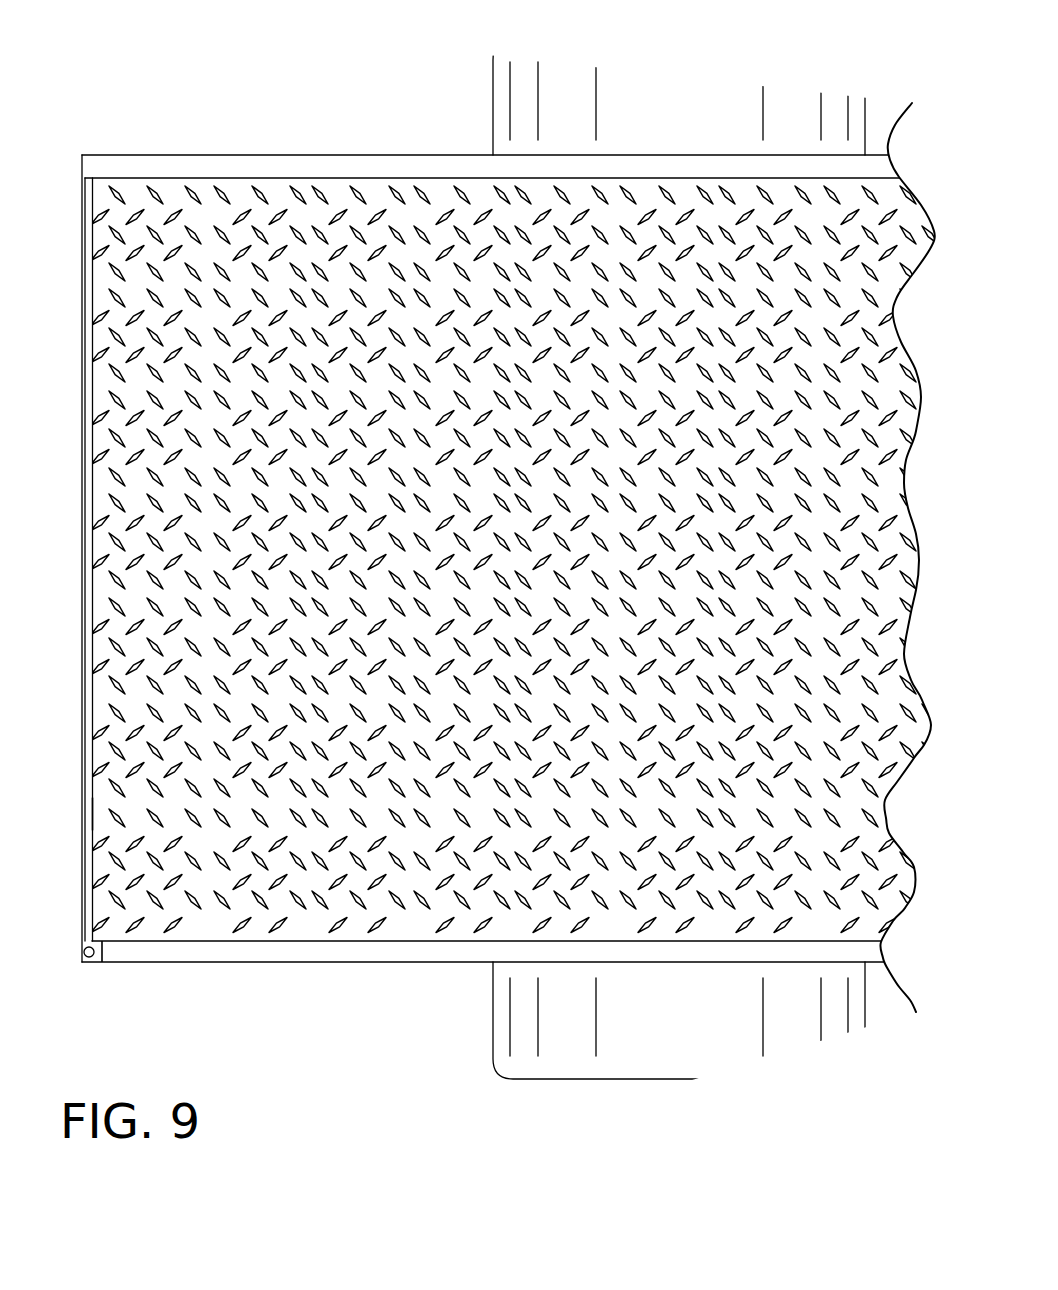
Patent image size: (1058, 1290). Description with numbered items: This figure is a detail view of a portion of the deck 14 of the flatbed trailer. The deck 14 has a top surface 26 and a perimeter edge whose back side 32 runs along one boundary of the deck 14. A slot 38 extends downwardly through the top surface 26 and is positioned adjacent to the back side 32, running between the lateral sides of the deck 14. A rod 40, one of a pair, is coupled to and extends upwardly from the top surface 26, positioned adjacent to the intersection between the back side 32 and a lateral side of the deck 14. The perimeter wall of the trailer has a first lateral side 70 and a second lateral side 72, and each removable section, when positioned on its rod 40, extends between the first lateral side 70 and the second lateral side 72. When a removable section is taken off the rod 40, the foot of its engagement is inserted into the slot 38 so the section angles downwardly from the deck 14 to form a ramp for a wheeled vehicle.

The deck 14 is at (333, 232).
The top surface 26 is at (228, 208).
The first lateral side 70 is at (414, 162).
The second lateral side 72 is at (378, 963).
The back side 32 is at (80, 733).
The slot 38 is at (100, 808).
The rod 40 is at (91, 957).